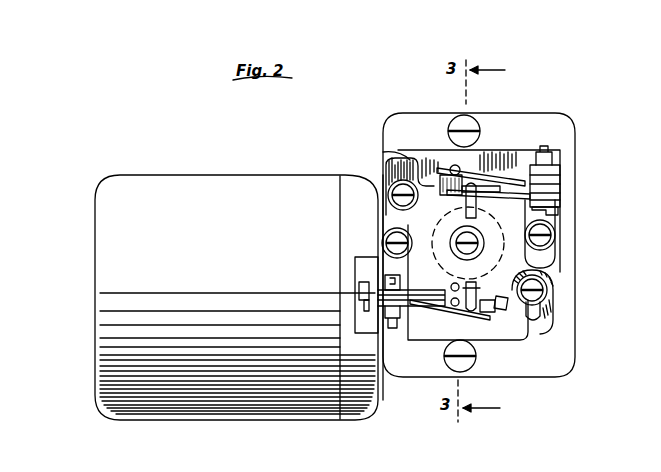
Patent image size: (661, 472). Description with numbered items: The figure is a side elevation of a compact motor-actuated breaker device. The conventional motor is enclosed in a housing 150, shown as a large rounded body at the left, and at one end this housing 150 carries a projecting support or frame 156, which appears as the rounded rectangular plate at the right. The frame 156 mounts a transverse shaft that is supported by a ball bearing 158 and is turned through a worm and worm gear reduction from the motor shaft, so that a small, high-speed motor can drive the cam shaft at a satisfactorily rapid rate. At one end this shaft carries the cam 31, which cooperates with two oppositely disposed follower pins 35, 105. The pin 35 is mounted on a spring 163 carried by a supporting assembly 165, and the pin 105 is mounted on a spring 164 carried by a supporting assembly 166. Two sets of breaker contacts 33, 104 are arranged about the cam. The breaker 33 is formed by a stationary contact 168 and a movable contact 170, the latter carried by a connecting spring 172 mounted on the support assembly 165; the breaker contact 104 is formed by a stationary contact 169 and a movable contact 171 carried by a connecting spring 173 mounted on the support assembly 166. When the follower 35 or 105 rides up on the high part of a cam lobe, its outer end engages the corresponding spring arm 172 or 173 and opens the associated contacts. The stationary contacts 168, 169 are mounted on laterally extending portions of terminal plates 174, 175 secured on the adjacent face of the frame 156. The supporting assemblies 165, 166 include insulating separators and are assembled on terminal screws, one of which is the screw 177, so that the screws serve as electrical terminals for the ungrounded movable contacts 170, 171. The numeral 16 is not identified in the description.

The housing 150 is at (277, 408).
The support or frame 156 is at (555, 346).
The terminal plate 174 is at (392, 184).
The stationary contact 168 is at (398, 160).
The breaker 33 is at (436, 172).
The follower pin 35 is at (462, 192).
The movable contact 170 is at (495, 170).
The connecting spring 172 is at (510, 190).
The follower pin 105 is at (476, 298).
The supporting assembly 165 is at (557, 193).
The terminal bolt 16 is at (556, 158).
The spring 163 is at (548, 142).
The cam 31 is at (553, 237).
The stationary contact 169 is at (548, 297).
The terminal plate 175 is at (552, 319).
The spring 164 is at (405, 306).
The connecting spring 173 is at (445, 306).
The movable contact 171 is at (489, 316).
The breaker contact 104 is at (501, 312).
The supporting assembly 166 is at (382, 308).
The screw 177 is at (380, 330).
The ball bearing 158 is at (649, 187).